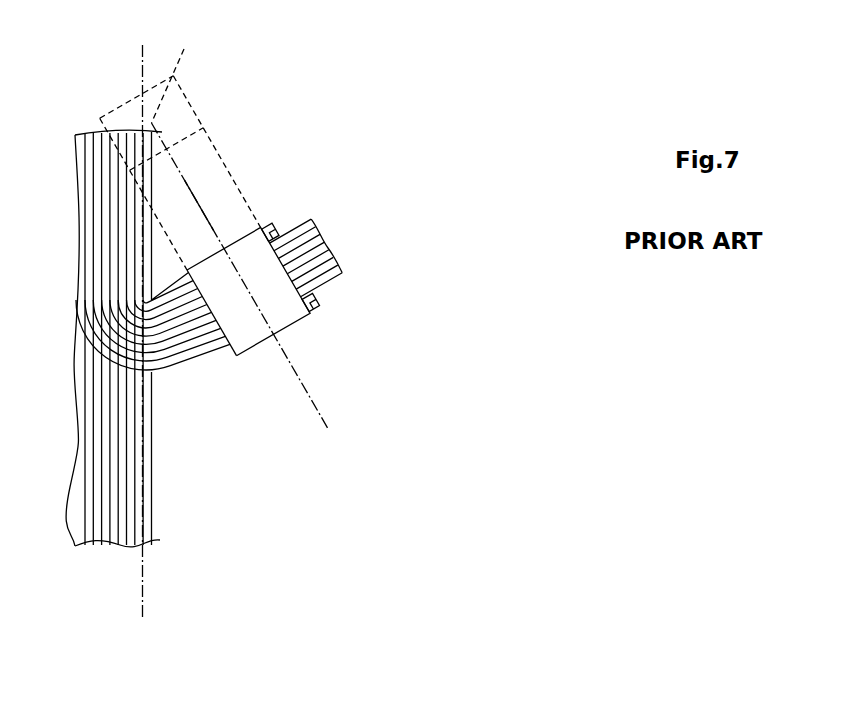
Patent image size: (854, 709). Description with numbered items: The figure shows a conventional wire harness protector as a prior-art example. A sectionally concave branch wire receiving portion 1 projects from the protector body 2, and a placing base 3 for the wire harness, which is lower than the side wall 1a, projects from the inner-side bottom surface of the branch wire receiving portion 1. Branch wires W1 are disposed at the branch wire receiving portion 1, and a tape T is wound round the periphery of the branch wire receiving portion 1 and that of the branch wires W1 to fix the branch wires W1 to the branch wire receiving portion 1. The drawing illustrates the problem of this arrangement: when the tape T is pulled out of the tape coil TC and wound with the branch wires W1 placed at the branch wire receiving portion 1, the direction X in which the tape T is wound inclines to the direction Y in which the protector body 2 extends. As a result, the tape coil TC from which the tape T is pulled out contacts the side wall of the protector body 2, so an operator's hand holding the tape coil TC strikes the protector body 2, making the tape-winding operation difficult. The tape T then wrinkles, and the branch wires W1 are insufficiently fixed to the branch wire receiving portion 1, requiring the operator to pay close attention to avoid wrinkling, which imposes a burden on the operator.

The branch wire receiving portion 1 is at (299, 321).
The side wall 1a is at (244, 351).
The protector body 2 is at (132, 478).
The placing base 3 is at (296, 332).
The branch wires W1 is at (297, 228).
The tape T is at (261, 334).
The tape coil TC is at (153, 149).
The direction in which the tape is wound X is at (185, 180).
The direction in which the protector body extends Y is at (139, 72).